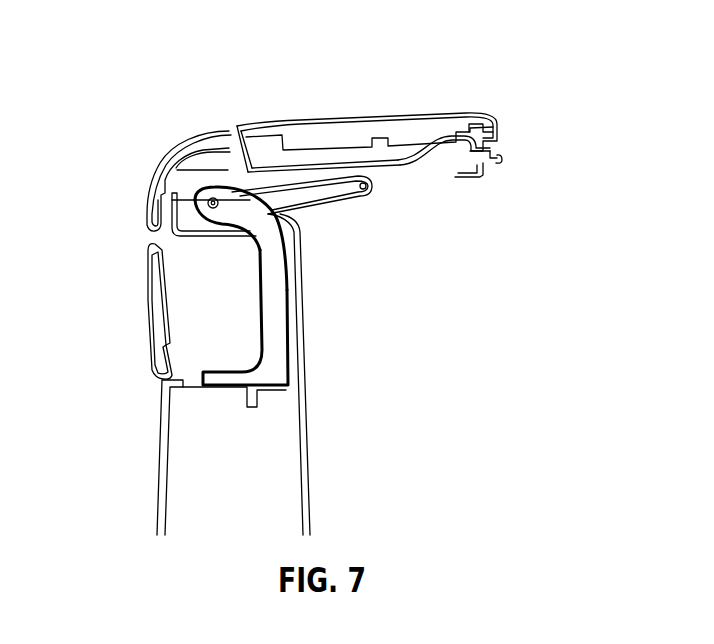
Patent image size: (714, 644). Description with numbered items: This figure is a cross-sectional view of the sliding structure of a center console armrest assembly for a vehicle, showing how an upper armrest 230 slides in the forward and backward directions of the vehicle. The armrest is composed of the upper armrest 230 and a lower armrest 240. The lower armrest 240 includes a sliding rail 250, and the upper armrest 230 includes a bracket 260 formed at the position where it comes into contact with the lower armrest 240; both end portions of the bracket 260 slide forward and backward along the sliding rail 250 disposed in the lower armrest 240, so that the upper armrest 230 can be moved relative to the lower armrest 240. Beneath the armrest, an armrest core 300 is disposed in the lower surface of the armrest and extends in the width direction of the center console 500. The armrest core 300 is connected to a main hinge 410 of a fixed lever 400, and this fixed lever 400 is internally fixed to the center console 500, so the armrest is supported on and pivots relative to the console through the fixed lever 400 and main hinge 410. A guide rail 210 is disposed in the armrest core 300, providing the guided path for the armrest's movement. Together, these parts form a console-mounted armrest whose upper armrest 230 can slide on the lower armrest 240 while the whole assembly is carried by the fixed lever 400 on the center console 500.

The guide rail 210 is at (296, 222).
The upper armrest 230 is at (463, 112).
The lower armrest 240 is at (488, 167).
The sliding rail 250 is at (430, 167).
The bracket 260 is at (329, 133).
The armrest core 300 is at (297, 202).
The fixed lever 400 is at (275, 362).
The main hinge 410 is at (209, 198).
The center console 500 is at (148, 322).